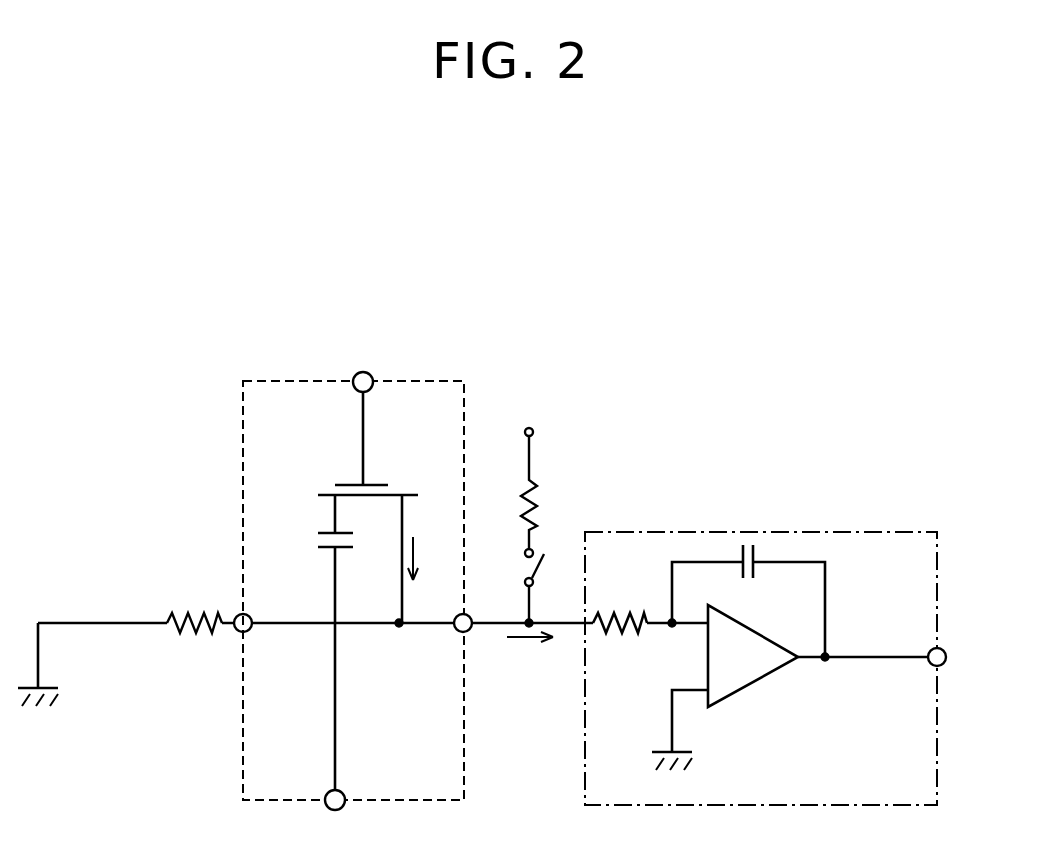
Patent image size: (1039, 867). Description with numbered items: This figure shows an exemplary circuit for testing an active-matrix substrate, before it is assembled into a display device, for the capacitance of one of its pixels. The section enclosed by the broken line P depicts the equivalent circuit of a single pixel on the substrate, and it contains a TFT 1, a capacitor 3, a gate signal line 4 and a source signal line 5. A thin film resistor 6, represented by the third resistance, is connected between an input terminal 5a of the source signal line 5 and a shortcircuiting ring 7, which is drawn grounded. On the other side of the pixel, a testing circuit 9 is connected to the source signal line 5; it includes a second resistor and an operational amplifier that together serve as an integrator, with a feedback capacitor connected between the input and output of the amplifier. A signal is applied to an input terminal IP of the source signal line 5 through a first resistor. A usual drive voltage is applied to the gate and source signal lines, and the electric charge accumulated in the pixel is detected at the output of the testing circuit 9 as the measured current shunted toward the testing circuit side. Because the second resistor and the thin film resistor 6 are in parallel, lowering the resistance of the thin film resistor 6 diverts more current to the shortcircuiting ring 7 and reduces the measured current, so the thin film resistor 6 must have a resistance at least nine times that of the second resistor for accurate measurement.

The TFT 1 is at (385, 478).
The capacitor 3 is at (318, 523).
The gate signal line 4 is at (363, 371).
The source signal line 5 is at (435, 625).
The input terminal 5a is at (234, 633).
The thin film resistor 6 is at (185, 643).
The shortcircuiting ring 7 is at (65, 623).
The testing circuit 9 is at (737, 532).
The pixel section P is at (468, 390).
The input terminal IP is at (533, 428).